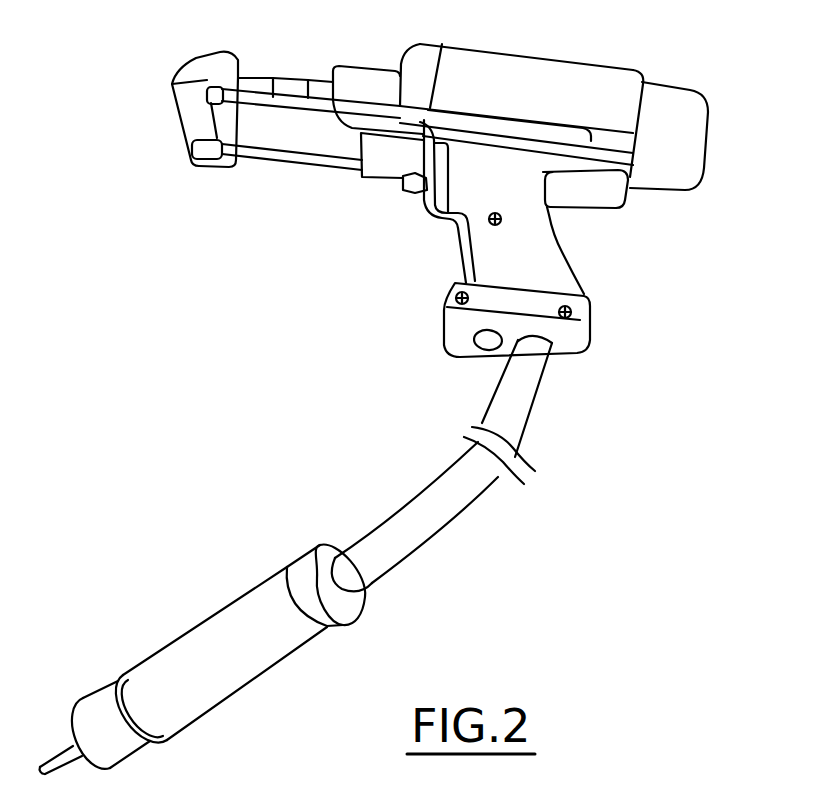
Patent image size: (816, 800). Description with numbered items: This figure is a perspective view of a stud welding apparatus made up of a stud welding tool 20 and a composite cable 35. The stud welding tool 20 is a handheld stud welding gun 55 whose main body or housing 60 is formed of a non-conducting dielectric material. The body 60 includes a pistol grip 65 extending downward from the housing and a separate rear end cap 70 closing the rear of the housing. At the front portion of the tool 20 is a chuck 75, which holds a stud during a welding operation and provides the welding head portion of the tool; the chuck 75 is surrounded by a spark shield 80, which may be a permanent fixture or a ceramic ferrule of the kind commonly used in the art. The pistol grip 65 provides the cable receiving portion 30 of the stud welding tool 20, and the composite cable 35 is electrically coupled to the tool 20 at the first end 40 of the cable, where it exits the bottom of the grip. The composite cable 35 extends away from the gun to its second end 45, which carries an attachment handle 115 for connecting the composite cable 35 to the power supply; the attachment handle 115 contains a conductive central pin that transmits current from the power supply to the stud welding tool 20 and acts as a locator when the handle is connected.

The stud welding tool 20 is at (540, 54).
The cable receiving portion 30 is at (442, 328).
The composite cable 35 is at (437, 533).
The first end 40 is at (550, 371).
The second end 45 is at (383, 580).
The stud welding gun 55 is at (603, 62).
The main body or housing 60 is at (462, 57).
The pistol grip 65 is at (550, 243).
The rear end cap 70 is at (696, 132).
The chuck 75 is at (345, 70).
The spark shield 80 is at (210, 60).
The attachment handle 115 is at (203, 637).